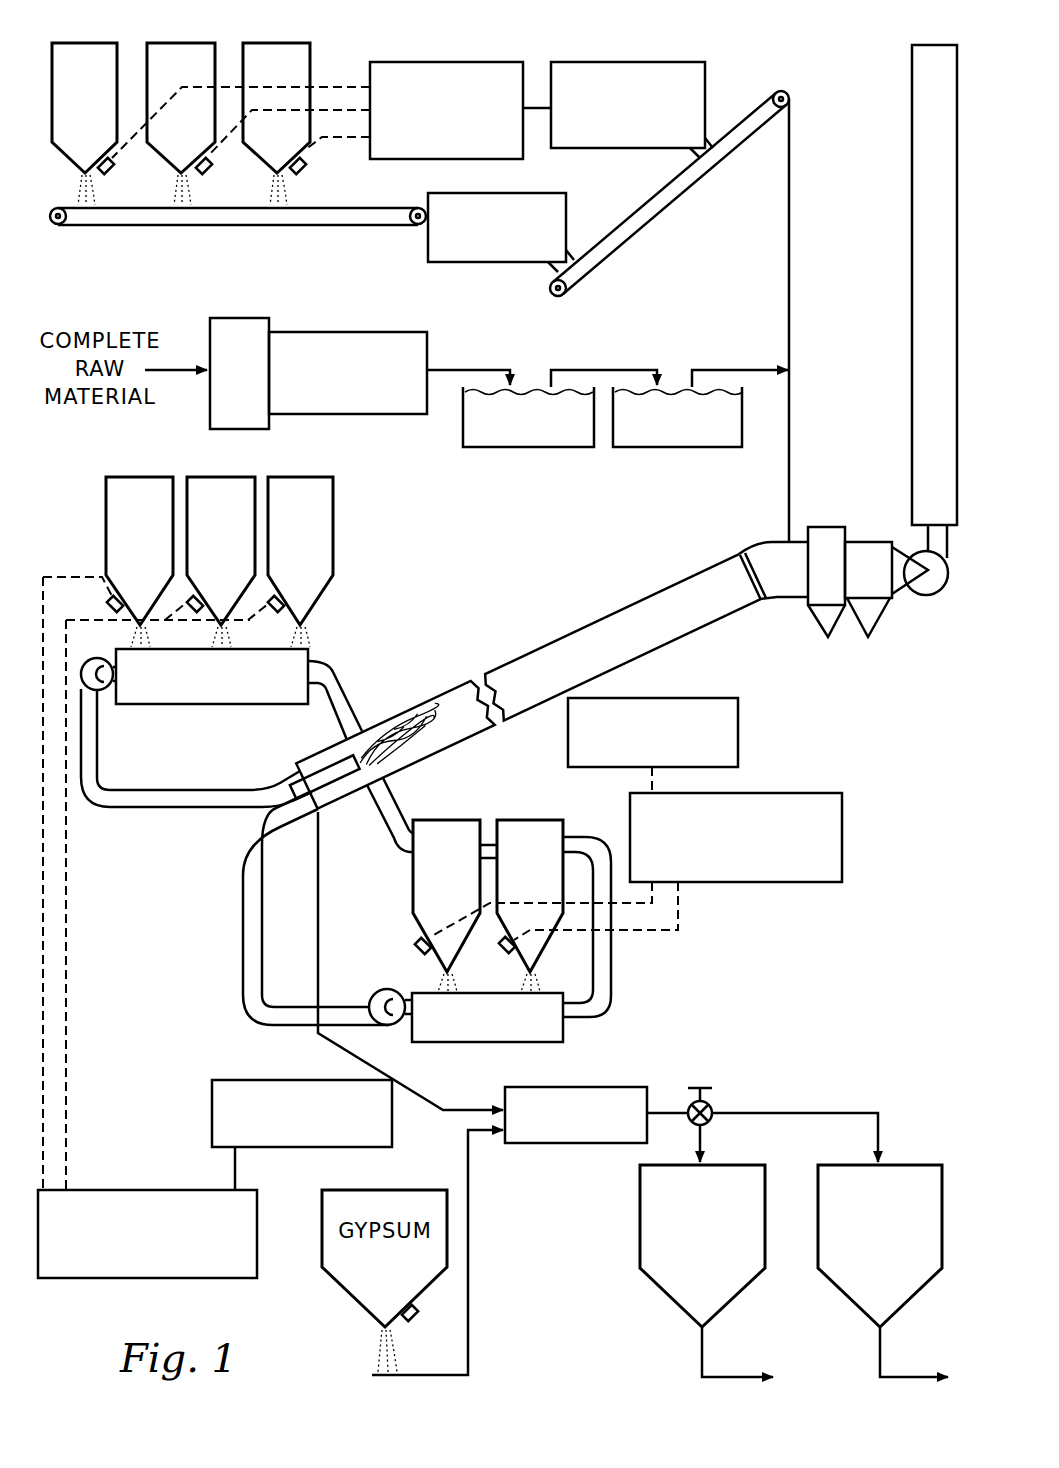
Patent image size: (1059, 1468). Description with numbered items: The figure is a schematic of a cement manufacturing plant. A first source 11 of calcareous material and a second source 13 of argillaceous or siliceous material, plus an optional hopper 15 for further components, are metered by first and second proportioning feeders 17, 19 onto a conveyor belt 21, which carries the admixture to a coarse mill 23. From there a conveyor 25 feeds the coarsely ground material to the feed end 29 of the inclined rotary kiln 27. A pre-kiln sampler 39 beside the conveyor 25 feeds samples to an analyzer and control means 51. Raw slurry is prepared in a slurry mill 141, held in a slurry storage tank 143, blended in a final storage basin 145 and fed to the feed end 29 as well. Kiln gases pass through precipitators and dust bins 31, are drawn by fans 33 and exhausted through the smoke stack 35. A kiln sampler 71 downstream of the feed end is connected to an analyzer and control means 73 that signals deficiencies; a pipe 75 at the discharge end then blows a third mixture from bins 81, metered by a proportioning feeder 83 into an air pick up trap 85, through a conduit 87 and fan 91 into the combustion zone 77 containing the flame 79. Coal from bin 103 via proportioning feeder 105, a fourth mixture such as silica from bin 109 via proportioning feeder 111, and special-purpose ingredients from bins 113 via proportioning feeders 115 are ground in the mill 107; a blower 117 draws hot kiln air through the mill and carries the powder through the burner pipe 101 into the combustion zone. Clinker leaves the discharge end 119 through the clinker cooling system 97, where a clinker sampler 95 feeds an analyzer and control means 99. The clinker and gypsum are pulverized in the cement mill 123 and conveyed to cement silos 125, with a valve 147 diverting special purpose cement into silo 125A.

The first source 11 is at (68, 46).
The second source 13 is at (170, 49).
The hopper 15 is at (267, 49).
The first proportioning feeder 17 is at (112, 172).
The second proportioning feeder 19 is at (210, 172).
The conveyor belt 21 is at (205, 228).
The coarse mill 23 is at (428, 248).
The conveyor 25 is at (665, 230).
The kiln 27 is at (675, 590).
The feed end 29 is at (757, 568).
The dust bins 31 is at (830, 641).
The fans 33 is at (920, 595).
The smoke stack 35 is at (912, 250).
The pre-kiln sampler 39 is at (588, 65).
The analyzer and control means 51 is at (412, 65).
The kiln sampler 71 is at (710, 698).
The analyzer and control means 73 is at (842, 838).
The pipe 75 is at (243, 920).
The combustion zone 77 is at (366, 727).
The flame 79 is at (410, 725).
The bins 81 is at (430, 820).
The proportioning feeder 83 is at (413, 943).
The air pick up trap 85 is at (590, 1030).
The conduit 87 is at (388, 835).
The fan 91 is at (372, 995).
The clinker sampler 95 is at (212, 1085).
The clinker cooling system 97 is at (318, 1045).
The analyzer and control means 99 is at (158, 1190).
The pipe 101 is at (175, 808).
The bin 103 is at (312, 477).
The proportioning feeder 105 is at (273, 612).
The mill 107 is at (213, 704).
The bin 109 is at (216, 477).
The proportioning feeder 111 is at (196, 612).
The bins 113 is at (128, 477).
The proportioning feeders 115 is at (108, 606).
The blower 117 is at (100, 692).
The discharge end 119 is at (300, 763).
The cement mill 123 is at (580, 1145).
The cement silos 125 is at (905, 1168).
The silo 125A is at (640, 1245).
The slurry mill 141 is at (238, 318).
The slurry storage tank 143 is at (500, 450).
The final storage basin 145 is at (643, 450).
The valve 147 is at (712, 1105).